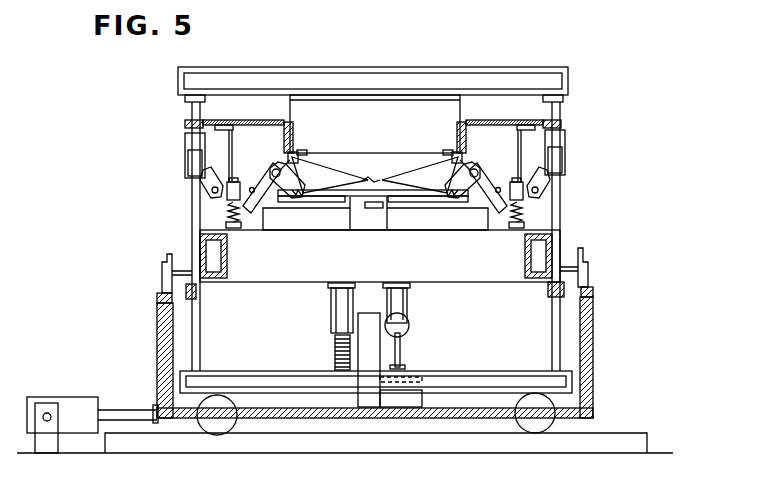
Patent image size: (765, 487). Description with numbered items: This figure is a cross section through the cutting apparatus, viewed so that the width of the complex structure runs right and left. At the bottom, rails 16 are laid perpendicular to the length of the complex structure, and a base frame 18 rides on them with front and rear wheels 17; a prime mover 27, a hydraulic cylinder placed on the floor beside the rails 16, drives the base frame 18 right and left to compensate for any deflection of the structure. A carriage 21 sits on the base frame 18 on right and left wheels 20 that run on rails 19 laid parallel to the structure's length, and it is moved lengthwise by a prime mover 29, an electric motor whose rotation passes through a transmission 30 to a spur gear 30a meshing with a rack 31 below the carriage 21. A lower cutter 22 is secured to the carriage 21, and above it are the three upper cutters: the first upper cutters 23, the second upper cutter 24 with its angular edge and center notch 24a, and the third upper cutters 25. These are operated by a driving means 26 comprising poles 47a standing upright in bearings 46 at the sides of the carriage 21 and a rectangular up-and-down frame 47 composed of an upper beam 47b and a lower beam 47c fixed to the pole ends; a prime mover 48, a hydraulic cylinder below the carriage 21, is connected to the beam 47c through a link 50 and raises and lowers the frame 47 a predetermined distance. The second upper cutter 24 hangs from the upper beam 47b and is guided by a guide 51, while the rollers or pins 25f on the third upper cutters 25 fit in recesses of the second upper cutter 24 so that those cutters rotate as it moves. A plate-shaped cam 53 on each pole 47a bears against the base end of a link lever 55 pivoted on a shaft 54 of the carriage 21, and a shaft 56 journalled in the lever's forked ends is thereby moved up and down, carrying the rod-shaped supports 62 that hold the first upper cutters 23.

The rails 16 is at (633, 432).
The wheels 17 is at (217, 433).
The base frame 18 is at (162, 352).
The rails 19 is at (157, 296).
The wheels 20 is at (162, 270).
The carriage 21 is at (487, 270).
The lower cutter 22 is at (302, 226).
The first upper cutters 23 is at (350, 203).
The second upper cutter 24 is at (385, 100).
The notch 24a is at (372, 178).
The third upper cutters 25 is at (298, 180).
The rollers or pins 25f is at (310, 153).
The driving means 26 is at (477, 62).
The prime mover 27 is at (82, 400).
The prime mover 29 is at (408, 405).
The transmission 30 is at (367, 405).
The spur gear 30a is at (335, 352).
The rack 31 is at (343, 322).
The bearings 46 is at (202, 287).
The up-and-down frame 47 is at (572, 73).
The poles 47a is at (195, 205).
The beam 47b is at (289, 73).
The beam 47c is at (490, 377).
The prime mover 48 is at (406, 322).
The link 50 is at (401, 348).
The guide 51 is at (463, 128).
The plate-shaped cam 53 is at (190, 140).
The shaft 54 is at (539, 190).
The link lever 55 is at (195, 182).
The shaft 56 is at (260, 165).
The supports 62 is at (408, 188).